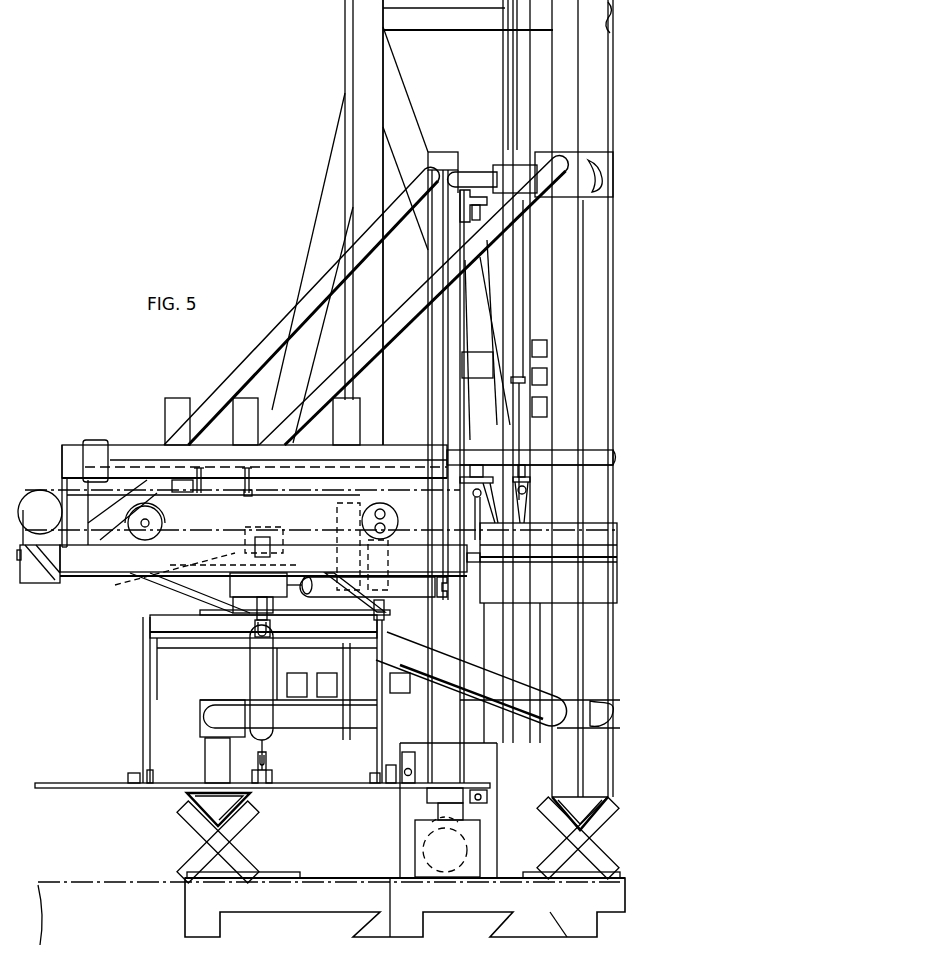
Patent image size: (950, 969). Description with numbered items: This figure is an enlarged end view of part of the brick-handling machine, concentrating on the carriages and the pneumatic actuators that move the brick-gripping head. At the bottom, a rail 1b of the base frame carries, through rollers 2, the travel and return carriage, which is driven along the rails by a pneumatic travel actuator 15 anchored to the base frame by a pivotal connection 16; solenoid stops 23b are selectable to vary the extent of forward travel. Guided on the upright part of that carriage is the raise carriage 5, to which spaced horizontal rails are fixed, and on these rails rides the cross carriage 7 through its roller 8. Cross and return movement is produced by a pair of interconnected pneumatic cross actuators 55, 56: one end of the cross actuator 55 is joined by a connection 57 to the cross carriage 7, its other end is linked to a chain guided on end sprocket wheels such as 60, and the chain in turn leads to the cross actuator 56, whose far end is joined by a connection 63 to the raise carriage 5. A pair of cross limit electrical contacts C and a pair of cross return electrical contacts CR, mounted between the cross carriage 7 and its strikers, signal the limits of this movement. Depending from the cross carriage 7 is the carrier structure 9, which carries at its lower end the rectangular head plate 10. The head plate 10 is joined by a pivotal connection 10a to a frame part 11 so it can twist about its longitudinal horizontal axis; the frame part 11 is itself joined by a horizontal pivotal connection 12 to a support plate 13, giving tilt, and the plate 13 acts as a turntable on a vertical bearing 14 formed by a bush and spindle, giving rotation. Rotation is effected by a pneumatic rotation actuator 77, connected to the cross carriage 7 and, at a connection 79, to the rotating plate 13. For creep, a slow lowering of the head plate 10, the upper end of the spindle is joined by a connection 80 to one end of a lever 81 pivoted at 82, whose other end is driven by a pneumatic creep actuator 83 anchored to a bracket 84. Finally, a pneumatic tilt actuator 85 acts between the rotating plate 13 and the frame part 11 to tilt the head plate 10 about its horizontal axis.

The rail 1b is at (558, 857).
The rollers 2 is at (173, 820).
The raise carriage 5 is at (50, 578).
The cross carriage 7 is at (128, 445).
The roller 8 is at (160, 520).
The carrier structure 9 is at (125, 700).
The head plate 10 is at (88, 789).
The pivotal connection 10a is at (138, 772).
The frame part 11 is at (270, 735).
The pivotal connection 12 is at (165, 632).
The support plate 13 is at (210, 616).
The vertical bearing 14 is at (260, 600).
The pneumatic travel actuator 15 is at (415, 849).
The pivotal connection 16 is at (192, 860).
The solenoid stops 23b is at (323, 675).
The pneumatic cross actuator 55 is at (437, 457).
The pneumatic cross actuator 56 is at (480, 580).
The connection 57 is at (93, 445).
The end sprocket wheel 60 is at (42, 495).
The connection 63 is at (30, 580).
The pneumatic rotation actuator 77 is at (407, 594).
The connection 79 is at (277, 583).
The connection 80 is at (163, 590).
The lever 81 is at (308, 668).
The pivot 82 is at (307, 553).
The pneumatic creep actuator 83 is at (388, 554).
The bracket 84 is at (387, 470).
The pneumatic tilt actuator 85 is at (256, 673).
The cross limit electrical contacts C is at (197, 487).
The cross return electrical contacts CR is at (248, 496).